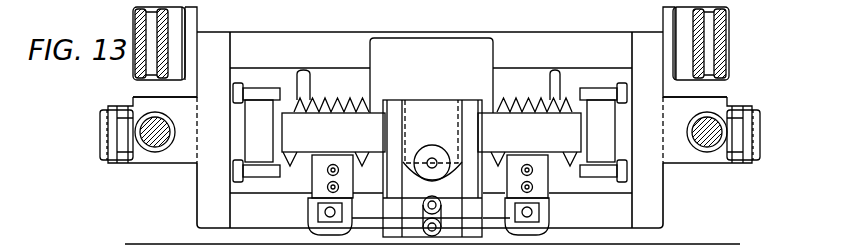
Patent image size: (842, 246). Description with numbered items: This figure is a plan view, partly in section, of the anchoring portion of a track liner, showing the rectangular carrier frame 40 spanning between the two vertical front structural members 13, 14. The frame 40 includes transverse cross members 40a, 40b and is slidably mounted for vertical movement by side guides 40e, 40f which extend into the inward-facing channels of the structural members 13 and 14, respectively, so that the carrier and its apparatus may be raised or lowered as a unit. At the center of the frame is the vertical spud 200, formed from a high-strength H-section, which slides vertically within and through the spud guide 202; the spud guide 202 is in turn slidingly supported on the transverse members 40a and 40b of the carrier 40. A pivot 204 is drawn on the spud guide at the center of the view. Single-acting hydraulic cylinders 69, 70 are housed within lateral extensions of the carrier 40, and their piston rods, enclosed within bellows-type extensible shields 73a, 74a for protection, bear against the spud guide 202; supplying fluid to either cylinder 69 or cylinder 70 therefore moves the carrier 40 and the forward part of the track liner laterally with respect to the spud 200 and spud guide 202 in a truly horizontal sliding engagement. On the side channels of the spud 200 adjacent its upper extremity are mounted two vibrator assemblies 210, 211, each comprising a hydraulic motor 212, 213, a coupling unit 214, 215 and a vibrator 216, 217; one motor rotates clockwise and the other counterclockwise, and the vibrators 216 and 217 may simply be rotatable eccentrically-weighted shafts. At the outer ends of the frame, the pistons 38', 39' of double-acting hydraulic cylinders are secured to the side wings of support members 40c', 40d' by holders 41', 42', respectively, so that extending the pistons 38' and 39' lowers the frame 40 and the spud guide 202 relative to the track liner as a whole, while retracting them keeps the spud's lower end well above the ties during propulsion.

The structural member 13 is at (133, 12).
The structural member 14 is at (731, 37).
The piston 38' is at (127, 124).
The piston 39' is at (718, 113).
The rectangular frame 40 is at (624, 224).
The cross member 40a is at (233, 212).
The cross member 40b is at (304, 24).
The support member 40c' is at (170, 187).
The support member 40d' is at (686, 209).
The side guide 40e is at (182, 27).
The side guide 40f is at (682, 25).
The holder 41' is at (127, 161).
The holder 42' is at (734, 163).
The hydraulic cylinder 69 is at (100, 138).
The hydraulic cylinder 70 is at (757, 140).
The extensible shield 73a is at (298, 100).
The extensible shield 74a is at (511, 100).
The spud 200 is at (413, 102).
The spud guide 202 is at (467, 52).
The pivot 204 is at (434, 155).
The vibrator assembly 210 is at (326, 136).
The vibrator assembly 211 is at (540, 136).
The hydraulic motor 212 is at (312, 222).
The hydraulic motor 213 is at (537, 215).
The coupling unit 214 is at (323, 178).
The coupling unit 215 is at (538, 177).
The vibrator 216 is at (288, 143).
The vibrator 217 is at (570, 130).